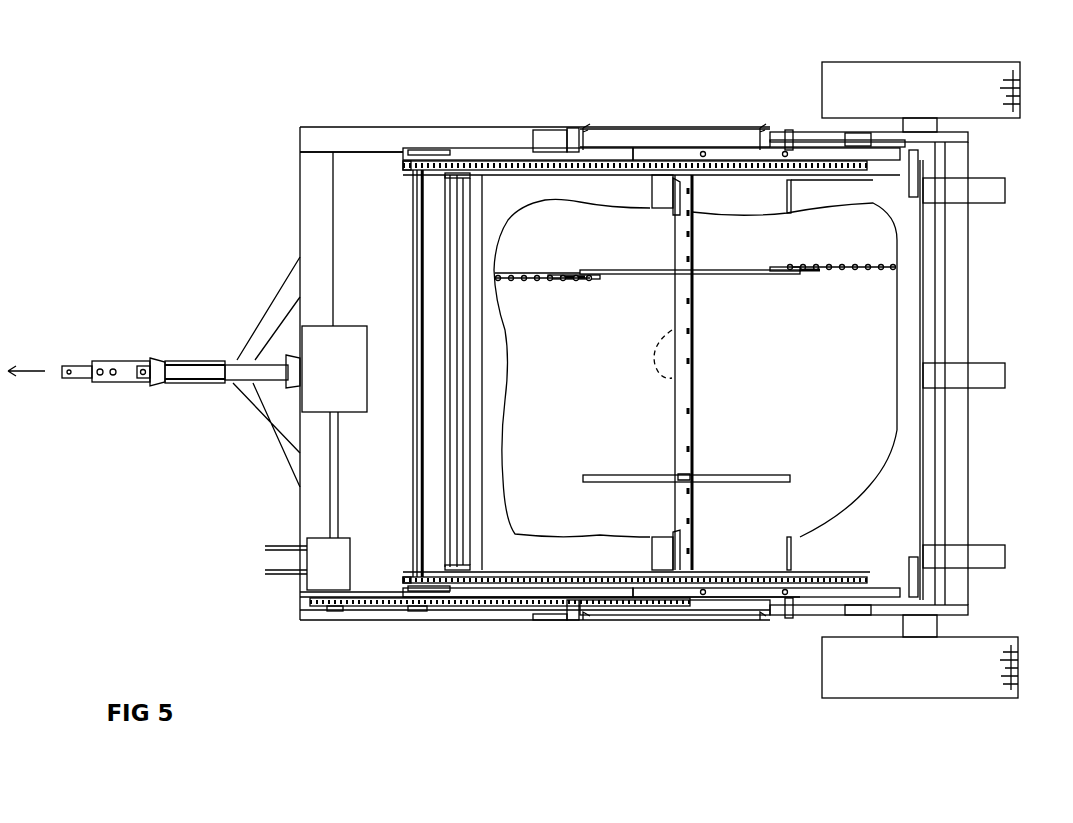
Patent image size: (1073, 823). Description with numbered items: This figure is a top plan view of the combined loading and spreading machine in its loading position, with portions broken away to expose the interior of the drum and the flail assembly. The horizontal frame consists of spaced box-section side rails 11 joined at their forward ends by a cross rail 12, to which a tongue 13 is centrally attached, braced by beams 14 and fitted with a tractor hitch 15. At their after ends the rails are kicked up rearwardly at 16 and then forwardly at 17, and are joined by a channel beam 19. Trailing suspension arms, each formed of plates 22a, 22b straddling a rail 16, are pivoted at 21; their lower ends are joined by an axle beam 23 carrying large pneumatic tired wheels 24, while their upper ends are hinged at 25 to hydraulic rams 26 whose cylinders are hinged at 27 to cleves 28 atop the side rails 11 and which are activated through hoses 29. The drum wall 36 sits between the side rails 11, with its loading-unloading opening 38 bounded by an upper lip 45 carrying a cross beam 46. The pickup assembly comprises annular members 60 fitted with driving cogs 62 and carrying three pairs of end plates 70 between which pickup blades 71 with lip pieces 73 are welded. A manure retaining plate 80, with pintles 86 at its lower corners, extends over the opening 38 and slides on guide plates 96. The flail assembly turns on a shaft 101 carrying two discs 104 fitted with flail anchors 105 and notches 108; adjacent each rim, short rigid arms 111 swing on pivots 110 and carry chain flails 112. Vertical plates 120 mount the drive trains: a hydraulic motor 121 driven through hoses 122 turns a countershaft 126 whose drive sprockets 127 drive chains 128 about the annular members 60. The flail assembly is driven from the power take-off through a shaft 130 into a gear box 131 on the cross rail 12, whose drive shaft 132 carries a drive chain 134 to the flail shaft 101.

The side rails 11 is at (462, 126).
The cross rail 12 is at (300, 182).
The tongue 13 is at (133, 358).
The beams 14 is at (268, 300).
The tractor hitch 15 is at (80, 380).
The rails 16 is at (863, 135).
The rails 17 is at (969, 140).
The channel beam 19 is at (969, 472).
The pivot 21 is at (853, 128).
The plate 22a is at (823, 130).
The plate 22b is at (890, 158).
The axle beam 23 is at (926, 119).
The pneumatic tired wheels 24 is at (1020, 64).
The hinge 25 is at (789, 130).
The hydraulic rams 26 is at (672, 128).
The hinge 27 is at (572, 128).
The cleves 28 is at (556, 130).
The hoses 29 is at (590, 124).
The drum wall 36 is at (506, 418).
The loading-unloading opening 38 is at (790, 210).
The upper lip 45 is at (690, 206).
The cross beam 46 is at (651, 192).
The annular members 60 is at (508, 162).
The driving cogs 62 is at (568, 577).
The pickup blade end plates 70 is at (418, 172).
The pickup blade 71 is at (463, 370).
The lip piece 73 is at (445, 268).
The manure retaining plate 80 is at (880, 474).
The pintles 86 is at (913, 198).
The guide plates 96 is at (1006, 190).
The shaft 101 is at (695, 351).
The disc 104 is at (752, 276).
The flail anchors 105 is at (670, 335).
The notches 108 is at (708, 271).
The pivot 110 is at (600, 279).
The arms 111 is at (575, 280).
The chain flail 112 is at (518, 281).
The vertical plates 120 is at (358, 150).
The hydraulic motor 121 is at (352, 540).
The hoses 122 is at (266, 572).
The countershaft 126 is at (413, 291).
The drive sprockets 127 is at (402, 167).
The drive chains 128 is at (442, 160).
The shaft 130 is at (200, 384).
The gear box 131 is at (348, 406).
The drive shaft 132 is at (340, 470).
The drive chain 134 is at (650, 607).